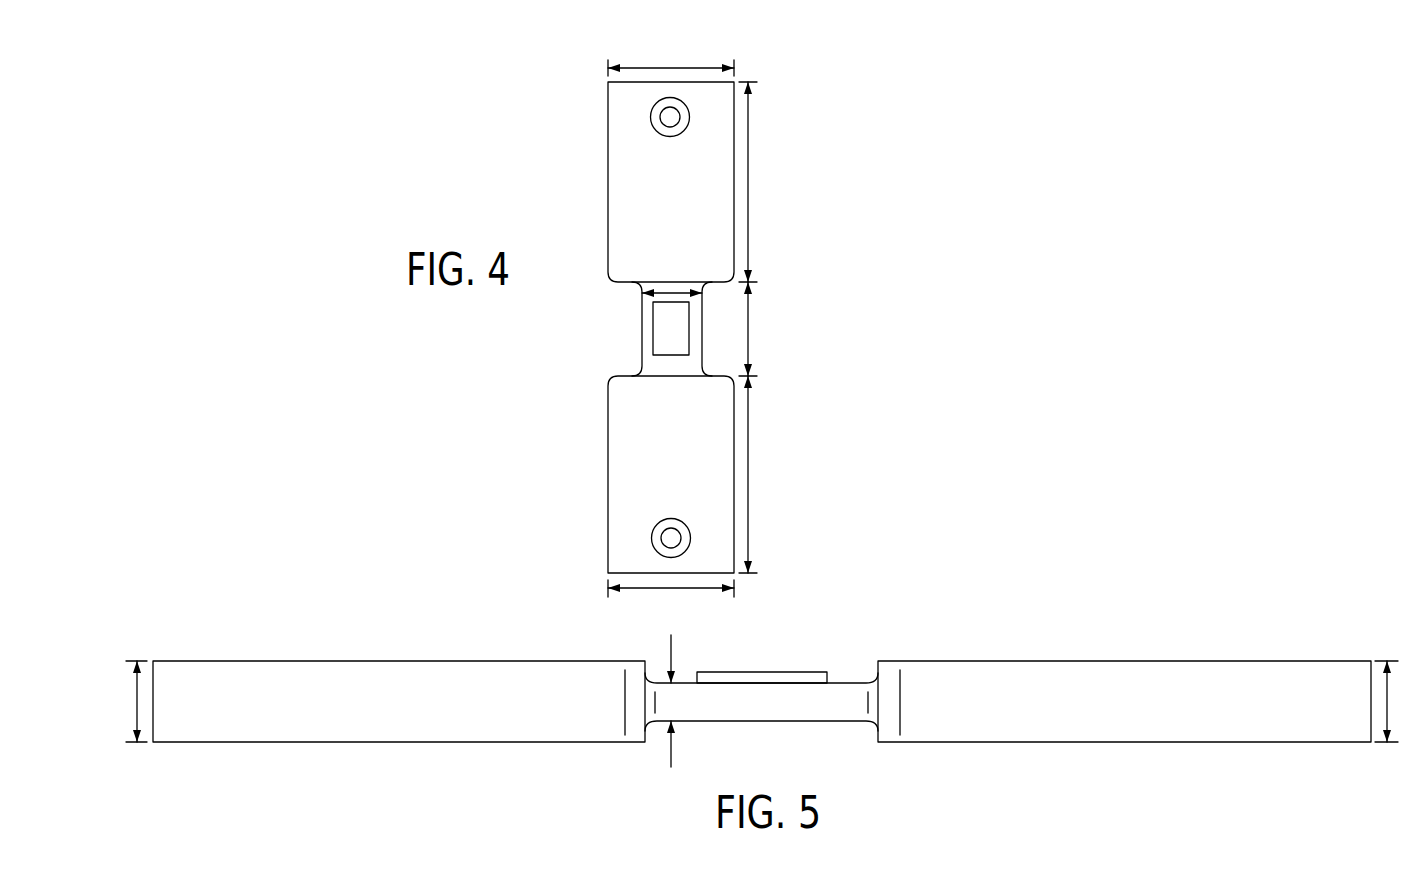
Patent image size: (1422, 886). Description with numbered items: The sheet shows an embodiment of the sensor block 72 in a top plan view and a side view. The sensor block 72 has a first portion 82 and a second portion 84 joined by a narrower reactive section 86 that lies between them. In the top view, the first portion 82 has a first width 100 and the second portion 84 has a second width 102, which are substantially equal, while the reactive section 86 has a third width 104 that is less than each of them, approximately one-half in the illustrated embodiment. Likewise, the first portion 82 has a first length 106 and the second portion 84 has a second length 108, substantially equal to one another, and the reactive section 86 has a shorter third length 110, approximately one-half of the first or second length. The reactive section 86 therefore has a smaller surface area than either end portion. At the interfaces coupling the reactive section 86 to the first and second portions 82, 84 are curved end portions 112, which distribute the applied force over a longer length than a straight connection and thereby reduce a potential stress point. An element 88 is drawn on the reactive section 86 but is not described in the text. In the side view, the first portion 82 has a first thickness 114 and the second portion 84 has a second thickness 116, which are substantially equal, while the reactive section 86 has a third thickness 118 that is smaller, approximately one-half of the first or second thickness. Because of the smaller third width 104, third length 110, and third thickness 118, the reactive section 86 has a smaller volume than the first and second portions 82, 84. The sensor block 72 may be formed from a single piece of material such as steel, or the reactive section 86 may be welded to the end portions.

In FIG. 4, the sensor block 72 is at (520, 75).
In FIG. 4, the first portion 82 is at (657, 214).
In FIG. 5, the first portion 82 is at (1132, 716).
In FIG. 4, the second portion 84 is at (657, 468).
In FIG. 5, the second portion 84 is at (360, 720).
In FIG. 4, the reactive section 86 is at (702, 337).
In FIG. 5, the reactive section 86 is at (867, 721).
In FIG. 4, the strain gauge 88 is at (658, 341).
In FIG. 5, the strain gauge 88 is at (807, 672).
In FIG. 4, the first width 100 is at (670, 68).
In FIG. 4, the second width 102 is at (670, 593).
In FIG. 4, the third width 104 is at (668, 293).
In FIG. 4, the first length 106 is at (748, 182).
In FIG. 4, the second length 108 is at (748, 477).
In FIG. 4, the third length 110 is at (747, 327).
In FIG. 4, the curved end portions 112 is at (642, 284).
In FIG. 5, the first thickness 114 is at (1387, 700).
In FIG. 5, the second thickness 116 is at (138, 700).
In FIG. 5, the third thickness 118 is at (671, 750).